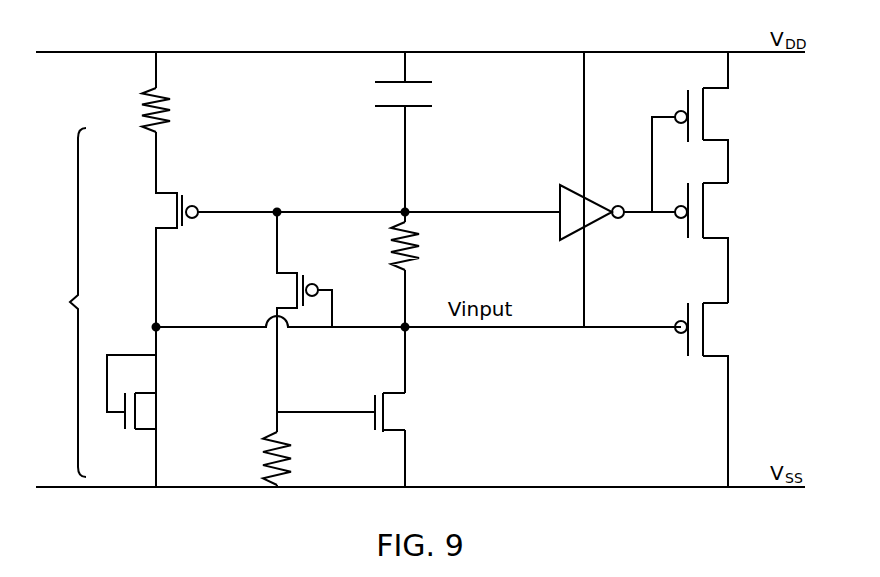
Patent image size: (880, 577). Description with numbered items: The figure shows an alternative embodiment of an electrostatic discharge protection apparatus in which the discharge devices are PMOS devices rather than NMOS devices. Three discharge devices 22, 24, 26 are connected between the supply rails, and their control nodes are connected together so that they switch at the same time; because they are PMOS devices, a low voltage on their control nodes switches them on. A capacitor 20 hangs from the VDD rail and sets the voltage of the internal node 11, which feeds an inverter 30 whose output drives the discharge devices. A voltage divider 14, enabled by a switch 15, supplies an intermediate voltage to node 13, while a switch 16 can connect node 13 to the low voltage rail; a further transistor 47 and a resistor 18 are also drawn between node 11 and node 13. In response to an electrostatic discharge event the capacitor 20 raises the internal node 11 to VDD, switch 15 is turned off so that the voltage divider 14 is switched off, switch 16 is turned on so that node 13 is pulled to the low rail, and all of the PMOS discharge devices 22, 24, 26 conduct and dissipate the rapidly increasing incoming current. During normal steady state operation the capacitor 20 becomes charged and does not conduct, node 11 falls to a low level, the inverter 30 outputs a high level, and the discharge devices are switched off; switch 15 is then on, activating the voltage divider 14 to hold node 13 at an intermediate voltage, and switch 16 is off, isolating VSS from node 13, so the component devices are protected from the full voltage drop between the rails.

The node 11 is at (408, 210).
The node 13 is at (410, 333).
The voltage divider 14 is at (61, 302).
The switch 15 is at (178, 186).
The switch 16 is at (408, 415).
The resistor 18 is at (412, 262).
The capacitor 20 is at (438, 95).
The discharge device 22 is at (722, 328).
The discharge device 24 is at (723, 210).
The discharge device 26 is at (722, 118).
The inverter 30 is at (598, 226).
The transistor 47 is at (296, 268).